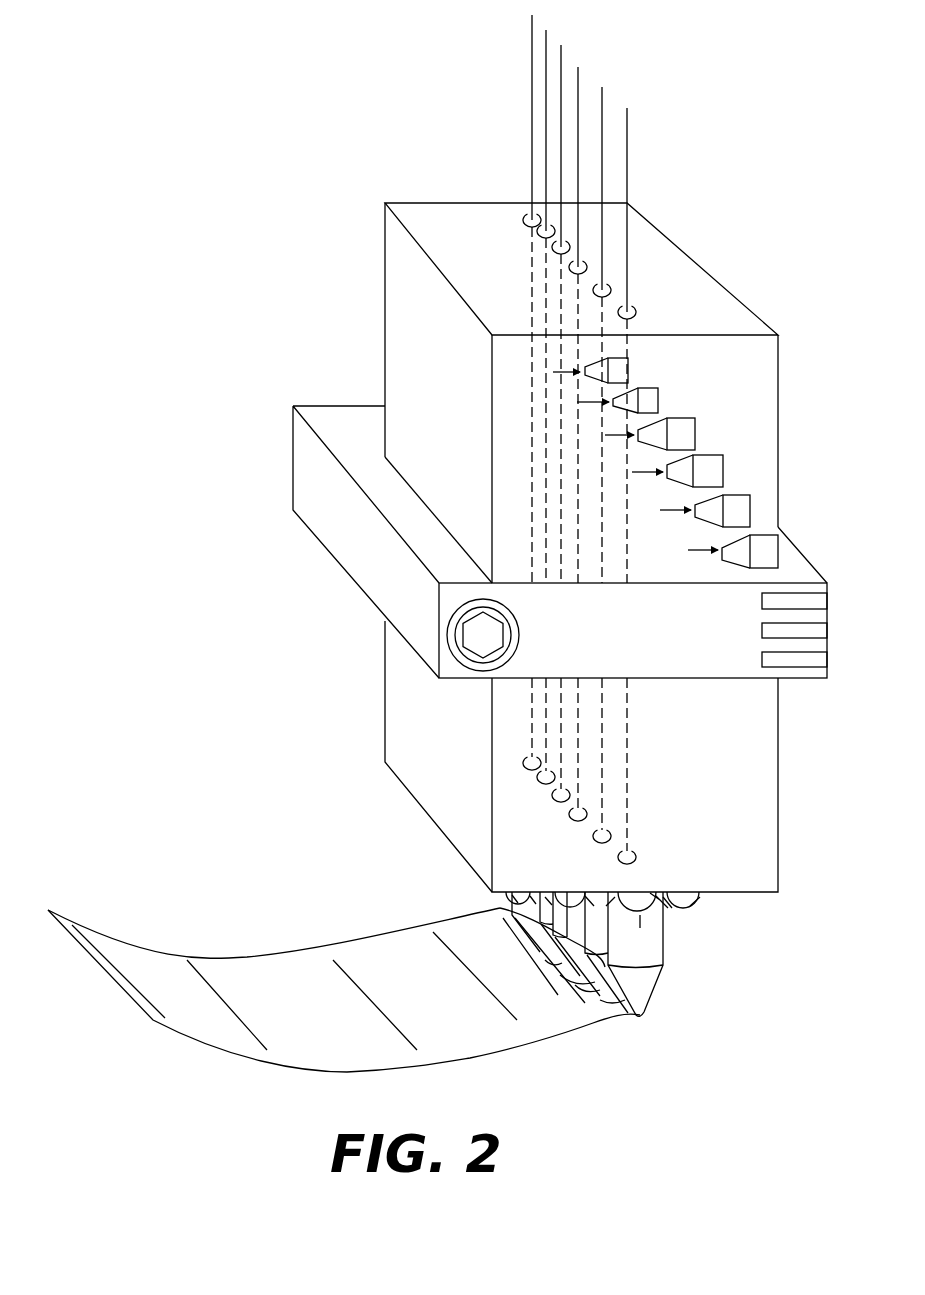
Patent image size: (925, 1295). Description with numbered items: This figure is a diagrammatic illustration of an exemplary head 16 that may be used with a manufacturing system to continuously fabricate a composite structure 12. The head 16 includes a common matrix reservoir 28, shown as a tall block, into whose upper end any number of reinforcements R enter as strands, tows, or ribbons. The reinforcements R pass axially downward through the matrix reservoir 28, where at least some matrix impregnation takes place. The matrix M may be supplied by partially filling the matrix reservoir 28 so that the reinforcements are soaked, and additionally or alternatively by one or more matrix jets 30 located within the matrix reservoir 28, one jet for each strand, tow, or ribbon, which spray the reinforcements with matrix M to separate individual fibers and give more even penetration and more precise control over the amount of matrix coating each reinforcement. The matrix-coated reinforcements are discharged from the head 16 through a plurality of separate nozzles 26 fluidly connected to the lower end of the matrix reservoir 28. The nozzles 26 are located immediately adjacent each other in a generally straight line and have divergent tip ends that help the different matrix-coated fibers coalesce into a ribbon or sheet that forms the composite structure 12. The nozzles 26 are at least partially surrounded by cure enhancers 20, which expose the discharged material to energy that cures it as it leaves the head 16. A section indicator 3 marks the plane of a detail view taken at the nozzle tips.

The head 16 is at (112, 126).
The matrix reservoir 28 is at (736, 815).
The matrix jets 30 is at (692, 445).
The cure enhancers 20 is at (667, 912).
The nozzles 26 is at (543, 967).
The composite structure 12 is at (308, 1009).
The section view indicator 3 is at (697, 995).
The reinforcements R is at (546, 163).
The matrix M is at (660, 510).